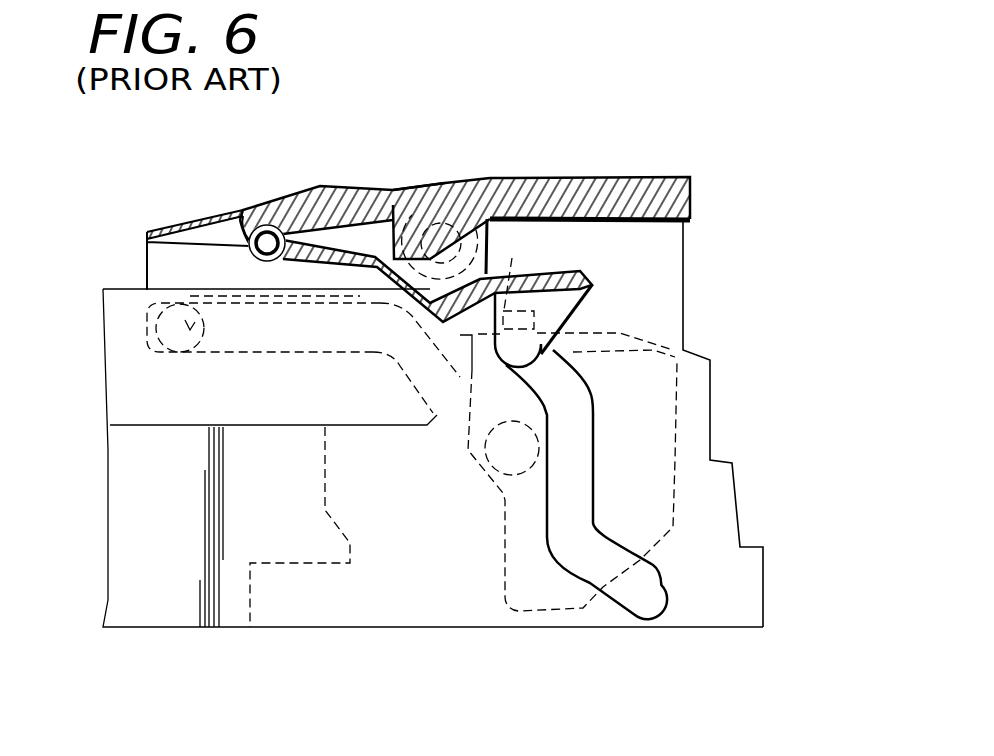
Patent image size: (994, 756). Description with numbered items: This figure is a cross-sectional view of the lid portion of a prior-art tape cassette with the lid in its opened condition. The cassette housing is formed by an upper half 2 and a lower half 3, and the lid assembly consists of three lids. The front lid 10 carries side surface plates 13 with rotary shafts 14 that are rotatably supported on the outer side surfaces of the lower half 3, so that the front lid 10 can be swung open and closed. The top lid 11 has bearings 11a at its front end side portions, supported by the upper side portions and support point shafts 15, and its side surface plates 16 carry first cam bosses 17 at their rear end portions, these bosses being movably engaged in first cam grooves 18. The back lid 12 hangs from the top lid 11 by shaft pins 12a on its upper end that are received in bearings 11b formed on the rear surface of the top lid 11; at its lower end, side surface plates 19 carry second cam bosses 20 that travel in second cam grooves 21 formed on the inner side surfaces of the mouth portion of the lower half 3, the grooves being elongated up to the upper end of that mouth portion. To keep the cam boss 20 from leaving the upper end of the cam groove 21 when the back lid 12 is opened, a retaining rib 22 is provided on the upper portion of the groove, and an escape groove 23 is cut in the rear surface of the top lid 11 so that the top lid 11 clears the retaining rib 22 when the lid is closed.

The upper half 2 is at (120, 376).
The lower half 3 is at (178, 607).
The front lid 10 is at (635, 177).
The top lid 11 is at (327, 187).
The bearing 11a is at (418, 188).
The bearing 11b is at (236, 218).
The back lid 12 is at (495, 179).
The shaft pin 12a is at (268, 236).
The side surface plate 13 is at (677, 243).
The rotary shaft 14 is at (497, 463).
The support point shaft 15 is at (447, 215).
The side surface plate 16 is at (147, 262).
The first cam boss 17 is at (143, 316).
The first cam groove 18 is at (281, 355).
The side surface plate 19 is at (595, 303).
The second cam boss 20 is at (690, 335).
The second cam groove 21 is at (598, 470).
The retaining rib 22 is at (527, 275).
The escape groove 23 is at (185, 226).